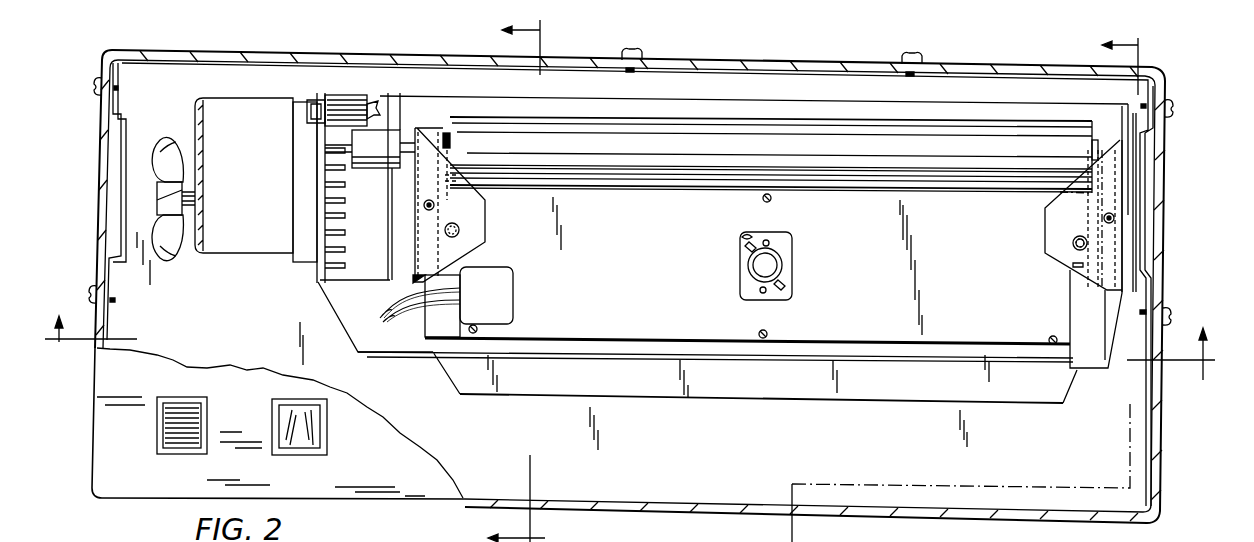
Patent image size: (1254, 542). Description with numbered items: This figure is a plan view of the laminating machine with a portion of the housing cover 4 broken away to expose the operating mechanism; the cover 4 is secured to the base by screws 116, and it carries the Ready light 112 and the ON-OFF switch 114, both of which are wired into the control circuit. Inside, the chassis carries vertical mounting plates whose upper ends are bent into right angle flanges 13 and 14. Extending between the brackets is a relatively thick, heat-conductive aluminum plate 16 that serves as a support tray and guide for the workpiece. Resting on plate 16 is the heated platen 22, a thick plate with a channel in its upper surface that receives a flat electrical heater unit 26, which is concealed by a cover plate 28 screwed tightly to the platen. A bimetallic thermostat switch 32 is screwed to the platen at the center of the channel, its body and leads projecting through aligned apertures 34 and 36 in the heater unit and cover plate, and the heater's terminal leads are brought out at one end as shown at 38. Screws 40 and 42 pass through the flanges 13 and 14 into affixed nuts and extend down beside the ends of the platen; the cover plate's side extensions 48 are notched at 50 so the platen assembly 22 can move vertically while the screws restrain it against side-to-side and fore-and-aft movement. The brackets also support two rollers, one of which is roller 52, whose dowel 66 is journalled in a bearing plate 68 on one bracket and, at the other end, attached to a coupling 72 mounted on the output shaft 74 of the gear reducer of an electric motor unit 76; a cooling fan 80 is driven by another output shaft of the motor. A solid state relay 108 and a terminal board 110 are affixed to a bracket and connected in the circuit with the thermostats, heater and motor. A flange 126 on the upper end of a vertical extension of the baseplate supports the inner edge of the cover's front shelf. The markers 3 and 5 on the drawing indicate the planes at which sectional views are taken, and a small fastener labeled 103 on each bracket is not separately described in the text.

The section line 3- 3 is at (632, 351).
The cover 4 is at (1130, 58).
The section line 5- 5 is at (530, 42).
The right angle flange 13 is at (486, 235).
The right angle flange 14 is at (1045, 231).
The plate 16 is at (1085, 328).
The heated platen 22 is at (645, 345).
The flat electrical heater unit 26 is at (795, 290).
The cover plate 28 is at (604, 288).
The bimetallic thermostat switch 32 is at (770, 265).
The aperture 34 is at (752, 282).
The aperture 36 is at (742, 236).
The terminal leads 38 is at (412, 317).
The screw 40 is at (443, 232).
The screw 42 is at (1075, 250).
The side extensions 48 is at (457, 262).
The notches 50 is at (462, 224).
The roller 52 is at (771, 133).
The dowel 66 is at (446, 130).
The bearing plate 68 is at (1125, 162).
The coupling 72 is at (392, 100).
The output shaft 74 is at (330, 134).
The electric motor unit 76 is at (246, 250).
The cooling fan 80 is at (184, 143).
The mounting screw 103 is at (425, 203).
The solid state relay 108 is at (352, 97).
The terminal board 110 is at (327, 204).
The Ready light 112 is at (300, 435).
The ON-OFF switch 114 is at (180, 435).
The screws 116 is at (94, 88).
The flange 126 is at (810, 388).